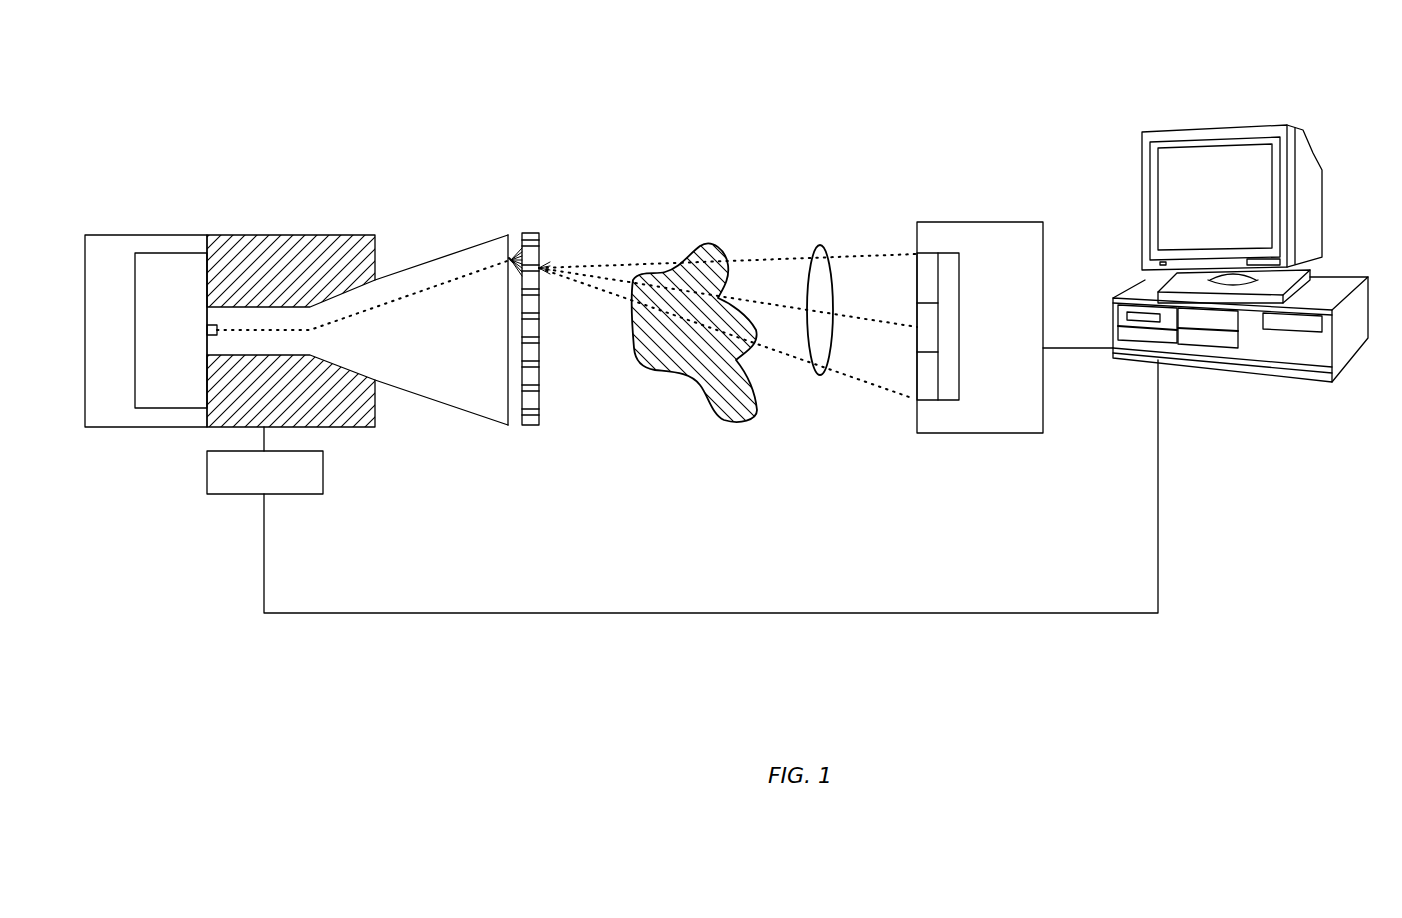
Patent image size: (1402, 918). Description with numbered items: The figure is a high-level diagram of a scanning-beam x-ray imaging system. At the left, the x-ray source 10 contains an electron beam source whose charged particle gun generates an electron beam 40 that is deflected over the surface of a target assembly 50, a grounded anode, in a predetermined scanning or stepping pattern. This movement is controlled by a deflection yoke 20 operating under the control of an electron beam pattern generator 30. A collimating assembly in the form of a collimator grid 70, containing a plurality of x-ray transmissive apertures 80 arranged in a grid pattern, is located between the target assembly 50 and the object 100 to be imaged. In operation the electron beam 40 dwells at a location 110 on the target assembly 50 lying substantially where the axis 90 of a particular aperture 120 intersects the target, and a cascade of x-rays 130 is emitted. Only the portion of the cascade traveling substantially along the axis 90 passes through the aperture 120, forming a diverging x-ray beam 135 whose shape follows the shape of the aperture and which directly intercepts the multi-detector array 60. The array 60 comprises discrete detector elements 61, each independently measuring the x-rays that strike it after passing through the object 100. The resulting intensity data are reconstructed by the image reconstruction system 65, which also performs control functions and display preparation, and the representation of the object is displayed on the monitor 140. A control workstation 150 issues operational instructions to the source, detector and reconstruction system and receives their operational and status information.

The x-ray source 10 is at (208, 117).
The deflection yoke 20 is at (293, 234).
The electron beam pattern generator 30 is at (207, 473).
The electron beam 40 is at (385, 300).
The target assembly 50 is at (510, 380).
The multi-detector array 60 is at (937, 401).
The detector elements 61 is at (917, 328).
The image reconstruction system 65 is at (1000, 434).
The collimator grid 70 is at (532, 426).
The x-ray transmissive apertures 80 is at (541, 388).
The axis 90 is at (852, 313).
The object 100 is at (706, 243).
The location 110 is at (508, 262).
The aperture 120 is at (542, 270).
The cascade of x-rays 130 is at (510, 255).
The diverging x-ray beam 135 is at (818, 245).
The monitor 140 is at (1325, 243).
The control workstation 150 is at (1215, 368).